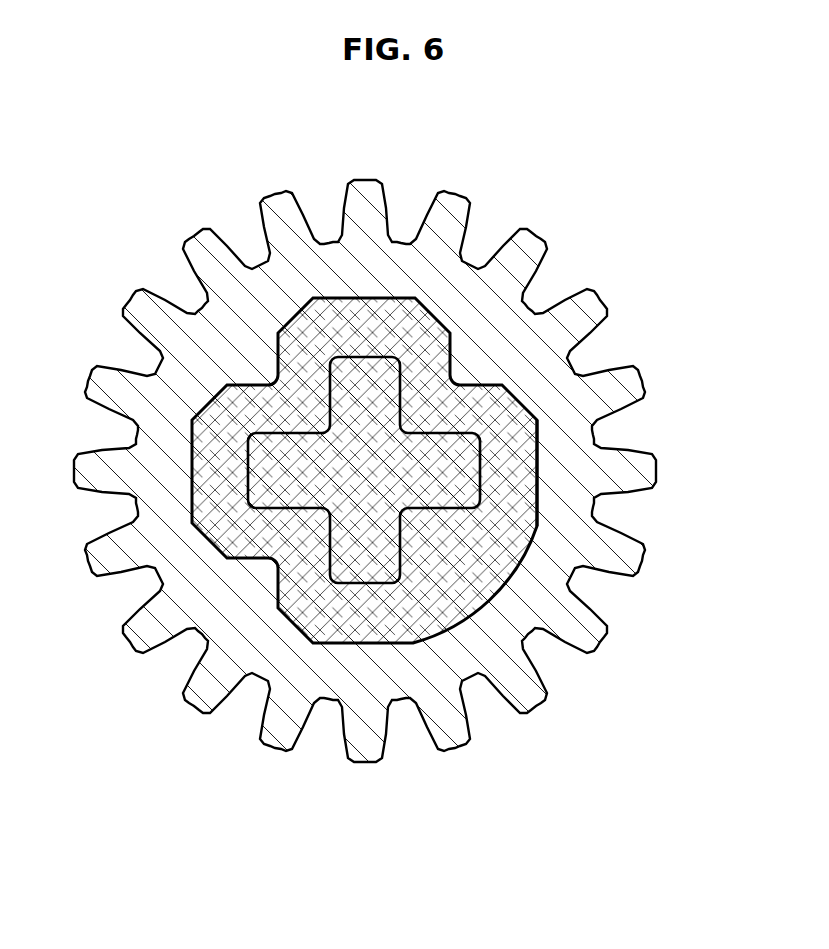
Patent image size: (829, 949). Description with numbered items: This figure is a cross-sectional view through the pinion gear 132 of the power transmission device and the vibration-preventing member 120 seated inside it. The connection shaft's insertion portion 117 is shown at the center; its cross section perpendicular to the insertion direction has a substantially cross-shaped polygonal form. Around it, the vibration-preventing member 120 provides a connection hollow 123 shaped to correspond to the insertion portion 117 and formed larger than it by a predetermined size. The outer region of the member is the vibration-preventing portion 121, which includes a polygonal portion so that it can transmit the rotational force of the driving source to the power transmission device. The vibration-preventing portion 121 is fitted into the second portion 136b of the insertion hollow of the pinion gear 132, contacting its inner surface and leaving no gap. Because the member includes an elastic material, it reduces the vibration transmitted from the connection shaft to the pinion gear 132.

The pinion gear 132 is at (456, 228).
The vibration-preventing portion 121 is at (493, 417).
The vibration-preventing member 120 is at (454, 470).
The second portion of insertion hollow 136b is at (537, 458).
The connection hollow 123 is at (478, 490).
The insertion portion 117 is at (368, 570).